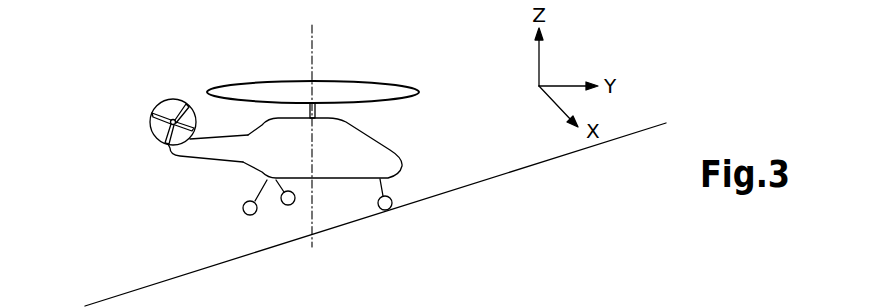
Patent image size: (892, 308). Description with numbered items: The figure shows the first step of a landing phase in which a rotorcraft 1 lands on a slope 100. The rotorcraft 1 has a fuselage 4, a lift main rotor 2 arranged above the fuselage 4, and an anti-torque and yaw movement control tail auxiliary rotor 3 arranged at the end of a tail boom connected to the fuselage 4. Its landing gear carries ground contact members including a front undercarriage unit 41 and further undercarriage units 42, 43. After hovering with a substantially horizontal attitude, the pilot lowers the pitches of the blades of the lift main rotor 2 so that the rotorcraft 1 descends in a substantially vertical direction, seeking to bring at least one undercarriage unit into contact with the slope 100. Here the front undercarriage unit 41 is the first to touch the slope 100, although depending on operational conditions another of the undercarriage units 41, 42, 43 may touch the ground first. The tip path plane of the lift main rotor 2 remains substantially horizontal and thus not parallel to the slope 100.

The rotorcraft 1 is at (420, 135).
The lift main rotor 2 is at (340, 80).
The tail auxiliary rotor 3 is at (157, 108).
The fuselage 4 is at (218, 147).
The front undercarriage unit 41 is at (389, 191).
The undercarriage unit 42 is at (256, 191).
The undercarriage unit 43 is at (277, 188).
The slope 100 is at (648, 128).